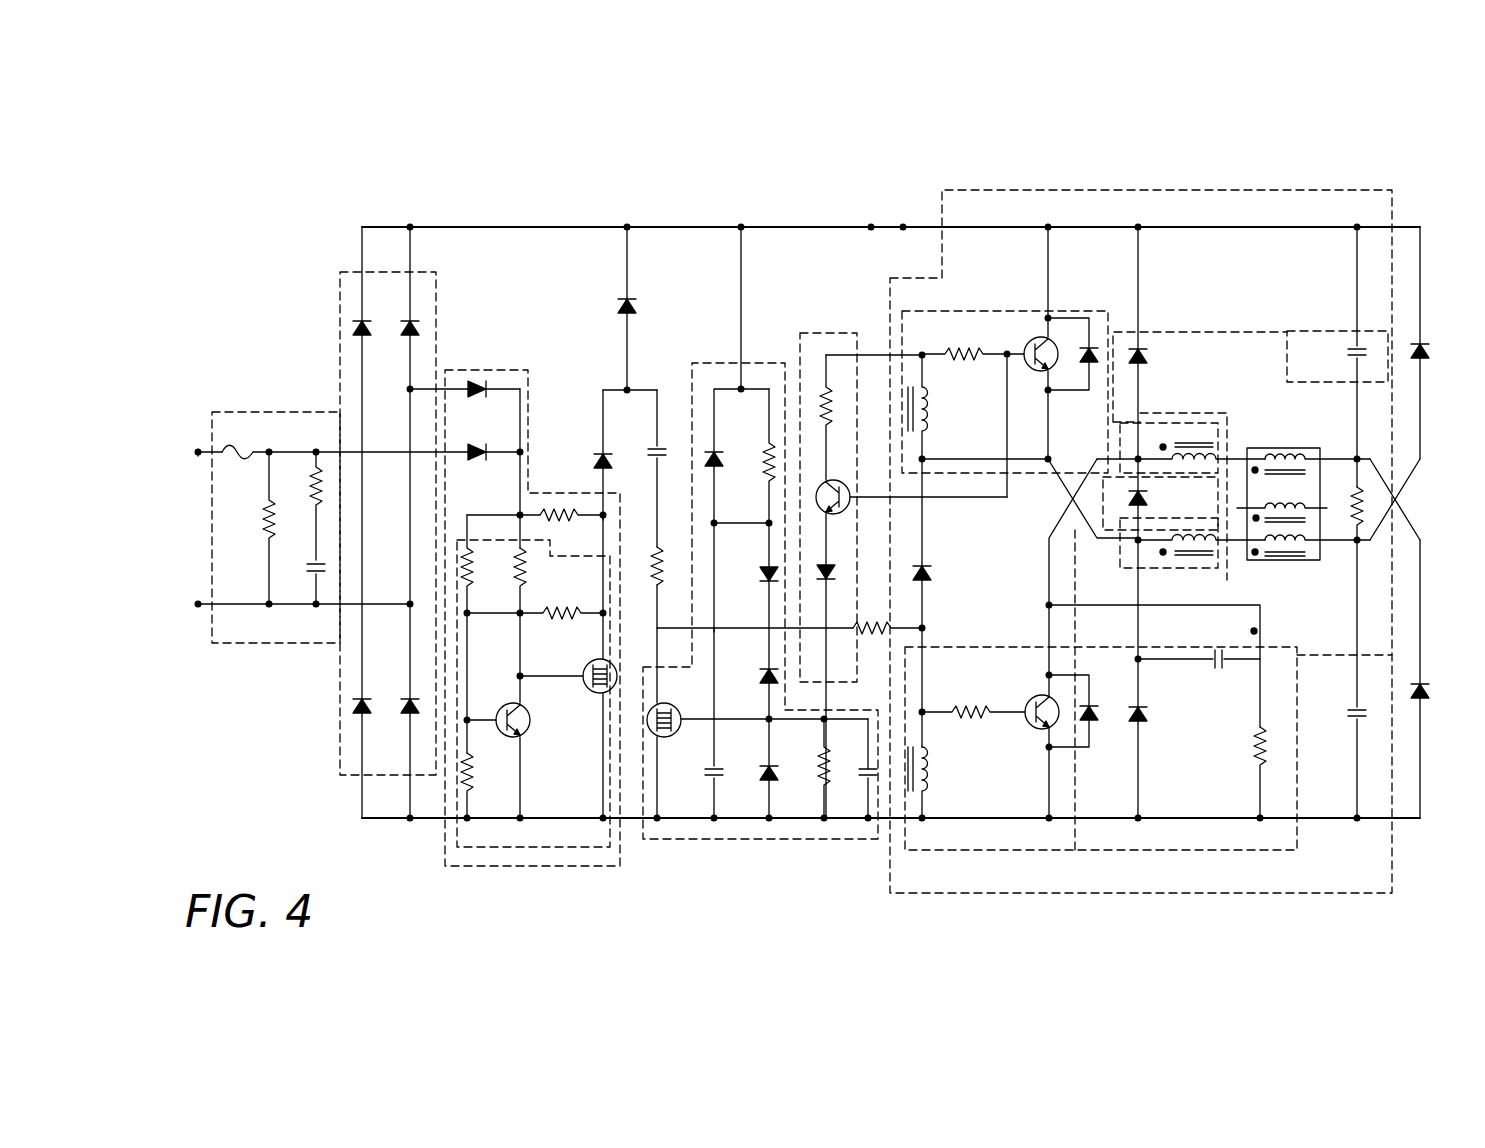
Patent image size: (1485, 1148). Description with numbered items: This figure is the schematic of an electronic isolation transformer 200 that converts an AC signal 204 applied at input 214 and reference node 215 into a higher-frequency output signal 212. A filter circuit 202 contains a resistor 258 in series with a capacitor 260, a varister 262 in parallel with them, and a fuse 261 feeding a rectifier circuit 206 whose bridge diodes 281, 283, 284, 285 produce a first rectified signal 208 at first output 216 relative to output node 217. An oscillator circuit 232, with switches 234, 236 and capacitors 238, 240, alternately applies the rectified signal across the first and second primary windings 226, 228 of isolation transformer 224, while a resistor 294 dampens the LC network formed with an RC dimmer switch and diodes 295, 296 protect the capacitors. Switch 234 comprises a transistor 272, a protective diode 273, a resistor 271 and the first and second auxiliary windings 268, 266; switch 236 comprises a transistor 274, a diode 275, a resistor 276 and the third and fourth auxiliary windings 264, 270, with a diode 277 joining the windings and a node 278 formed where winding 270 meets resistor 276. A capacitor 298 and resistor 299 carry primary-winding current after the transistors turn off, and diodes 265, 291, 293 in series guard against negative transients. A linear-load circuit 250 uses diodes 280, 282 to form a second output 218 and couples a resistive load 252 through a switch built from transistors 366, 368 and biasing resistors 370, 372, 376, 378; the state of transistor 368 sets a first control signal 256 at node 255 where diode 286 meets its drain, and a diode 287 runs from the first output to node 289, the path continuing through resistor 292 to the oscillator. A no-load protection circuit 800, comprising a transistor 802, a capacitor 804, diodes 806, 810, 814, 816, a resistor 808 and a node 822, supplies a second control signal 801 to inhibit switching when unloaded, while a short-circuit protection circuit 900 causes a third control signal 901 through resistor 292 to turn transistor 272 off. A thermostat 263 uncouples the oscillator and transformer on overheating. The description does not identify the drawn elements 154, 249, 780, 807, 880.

The electronic isolation transformer 200 is at (1120, 162).
The filter circuit 202 is at (265, 410).
The AC signal 204 is at (198, 455).
The rectifier circuit 206 is at (340, 272).
The first rectified signal 208 is at (565, 227).
The output signal 212 is at (1320, 495).
The input 214 is at (198, 452).
The reference node 215 is at (198, 606).
The first output 216 is at (410, 227).
The output node 217 is at (410, 820).
The second output 218 is at (522, 452).
The isolation transformer 224 is at (1272, 457).
The first primary winding 226 is at (1300, 455).
The second primary winding 228 is at (1287, 557).
The oscillator circuit 232 is at (985, 893).
The switch 234 is at (1030, 850).
The switch 236 is at (930, 311).
The capacitor 238 is at (1355, 345).
The capacitor 240 is at (1348, 712).
The node 249 is at (520, 513).
The linear-load circuit 250 is at (605, 866).
The resistive load 252 is at (565, 517).
The node 255 is at (605, 515).
The first control signal 256 is at (601, 465).
The resistor 258 is at (312, 488).
The capacitor 260 is at (310, 567).
The fuse 261 is at (250, 452).
The varister 262 is at (269, 522).
The thermostat 263 is at (871, 227).
The third auxiliary winding 264 is at (1192, 445).
The diode 265 is at (1147, 497).
The second auxiliary winding 266 is at (929, 782).
The first auxiliary winding 268 is at (1180, 553).
The fourth auxiliary winding 270 is at (929, 407).
The resistor 271 is at (966, 710).
The transistor 272 is at (1031, 724).
The diode 273 is at (1089, 702).
The transistor 274 is at (1030, 344).
The diode 275 is at (1089, 342).
The resistor 276 is at (957, 354).
The diode 277 is at (926, 582).
The node 278 is at (870, 355).
The diode 280 is at (520, 450).
The diode 281 is at (362, 330).
The diode 282 is at (472, 392).
The diode 283 is at (412, 327).
The diode 284 is at (364, 695).
The diode 285 is at (410, 718).
The diode 286 is at (604, 452).
The diode 287 is at (625, 305).
The node 289 is at (627, 389).
The diode 291 is at (1142, 362).
The resistor 292 is at (876, 628).
The diode 293 is at (1215, 605).
The resistor 294 is at (1387, 510).
The diode 295 is at (1423, 357).
The diode 296 is at (1423, 690).
The capacitor 298 is at (1213, 655).
The resistor 299 is at (1258, 735).
The control circuit 154 is at (495, 850).
The transistor 366 is at (508, 712).
The transistor 368 is at (596, 694).
The resistor 370 is at (470, 570).
The resistor 372 is at (470, 775).
The resistor 376 is at (522, 570).
The resistor 378 is at (565, 615).
The resistor 780 is at (660, 555).
The no-load protection circuit 800 is at (700, 841).
The second control signal 801 is at (660, 632).
The transistor 802 is at (767, 462).
The capacitor 804 is at (716, 772).
The diode 806 is at (775, 770).
The optocoupler 807 is at (675, 705).
The resistor 808 is at (660, 450).
The diode 810 is at (717, 455).
The diode 814 is at (762, 575).
The diode 816 is at (763, 675).
The node 822 is at (769, 523).
The resistor 880 is at (662, 580).
The short-circuit protection circuit 900 is at (800, 345).
The third control signal 901 is at (720, 628).